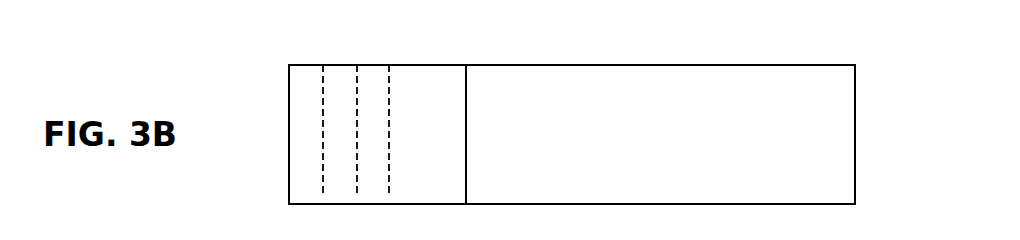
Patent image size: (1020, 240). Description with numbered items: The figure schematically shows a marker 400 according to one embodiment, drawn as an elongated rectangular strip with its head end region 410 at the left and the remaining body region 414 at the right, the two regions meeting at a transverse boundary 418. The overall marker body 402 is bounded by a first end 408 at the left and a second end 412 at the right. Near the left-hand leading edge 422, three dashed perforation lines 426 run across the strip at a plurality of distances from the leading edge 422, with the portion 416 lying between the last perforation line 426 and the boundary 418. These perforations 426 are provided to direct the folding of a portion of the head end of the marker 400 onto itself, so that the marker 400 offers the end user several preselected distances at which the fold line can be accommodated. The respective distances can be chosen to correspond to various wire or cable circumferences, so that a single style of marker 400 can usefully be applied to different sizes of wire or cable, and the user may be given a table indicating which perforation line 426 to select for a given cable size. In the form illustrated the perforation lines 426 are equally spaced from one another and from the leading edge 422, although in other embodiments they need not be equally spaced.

The marker 400 is at (928, 95).
The optical fiber 402 is at (567, 88).
The first end 408 is at (266, 134).
The first fiber section 410 is at (451, 172).
The second end 412 is at (872, 148).
The second fiber section 414 is at (697, 134).
The fiber portion 416 is at (429, 93).
The splice / interface 418 is at (467, 120).
The leading edge 422 is at (289, 177).
The perforations 426 is at (388, 82).